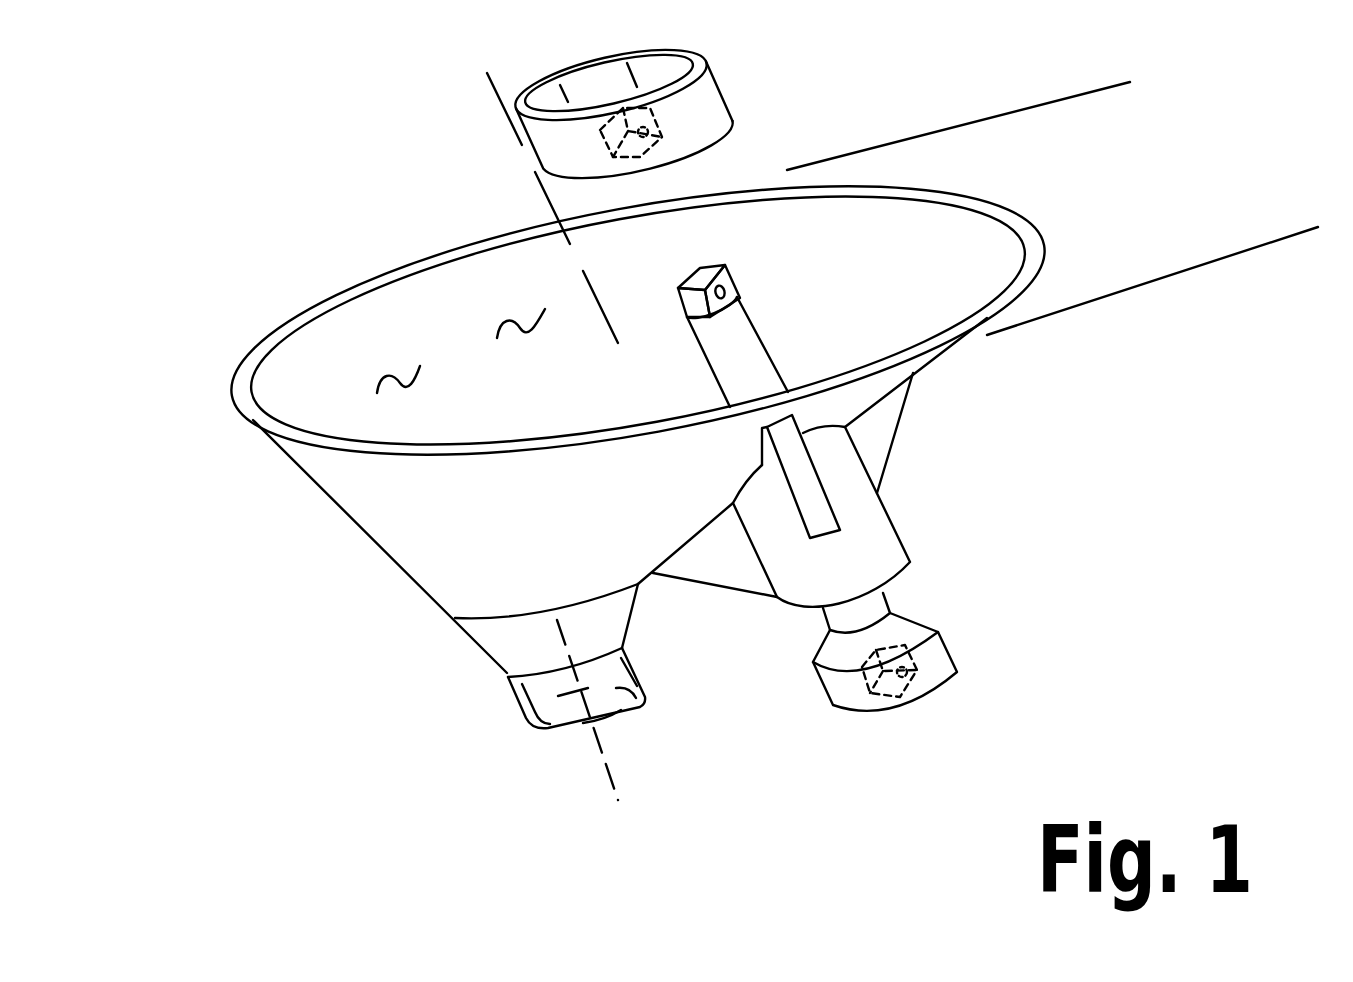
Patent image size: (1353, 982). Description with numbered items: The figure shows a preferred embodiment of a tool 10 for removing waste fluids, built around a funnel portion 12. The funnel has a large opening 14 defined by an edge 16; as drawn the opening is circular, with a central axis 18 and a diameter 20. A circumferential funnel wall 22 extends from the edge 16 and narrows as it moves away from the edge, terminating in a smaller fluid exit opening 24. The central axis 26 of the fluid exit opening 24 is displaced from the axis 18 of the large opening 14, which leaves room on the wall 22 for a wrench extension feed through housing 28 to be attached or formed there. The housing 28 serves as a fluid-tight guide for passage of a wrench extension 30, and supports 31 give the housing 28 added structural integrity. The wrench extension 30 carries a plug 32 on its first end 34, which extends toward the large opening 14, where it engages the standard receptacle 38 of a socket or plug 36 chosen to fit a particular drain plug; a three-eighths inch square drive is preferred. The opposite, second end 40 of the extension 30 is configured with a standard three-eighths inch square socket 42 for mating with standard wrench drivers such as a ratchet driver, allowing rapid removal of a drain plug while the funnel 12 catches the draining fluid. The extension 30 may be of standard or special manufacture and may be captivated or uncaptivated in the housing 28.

The tool 10 is at (448, 207).
The funnel portion 12 is at (365, 508).
The large opening 14 is at (443, 273).
The edge 16 is at (245, 363).
The central axis 18 is at (497, 96).
The diameter 20 is at (1061, 114).
The circumferential funnel wall 22 is at (461, 351).
The fluid exit opening 24 is at (546, 755).
The central axis 26 is at (618, 800).
The wrench extension feed through housing 28 is at (868, 543).
The wrench extension 30 is at (765, 337).
The supports 31 is at (903, 427).
The plug 32 is at (725, 278).
The first end 34 is at (668, 265).
The socket or plug 36 is at (713, 75).
The standard receptacle 38 is at (665, 123).
The second end 40 is at (857, 737).
The socket 42 is at (905, 675).